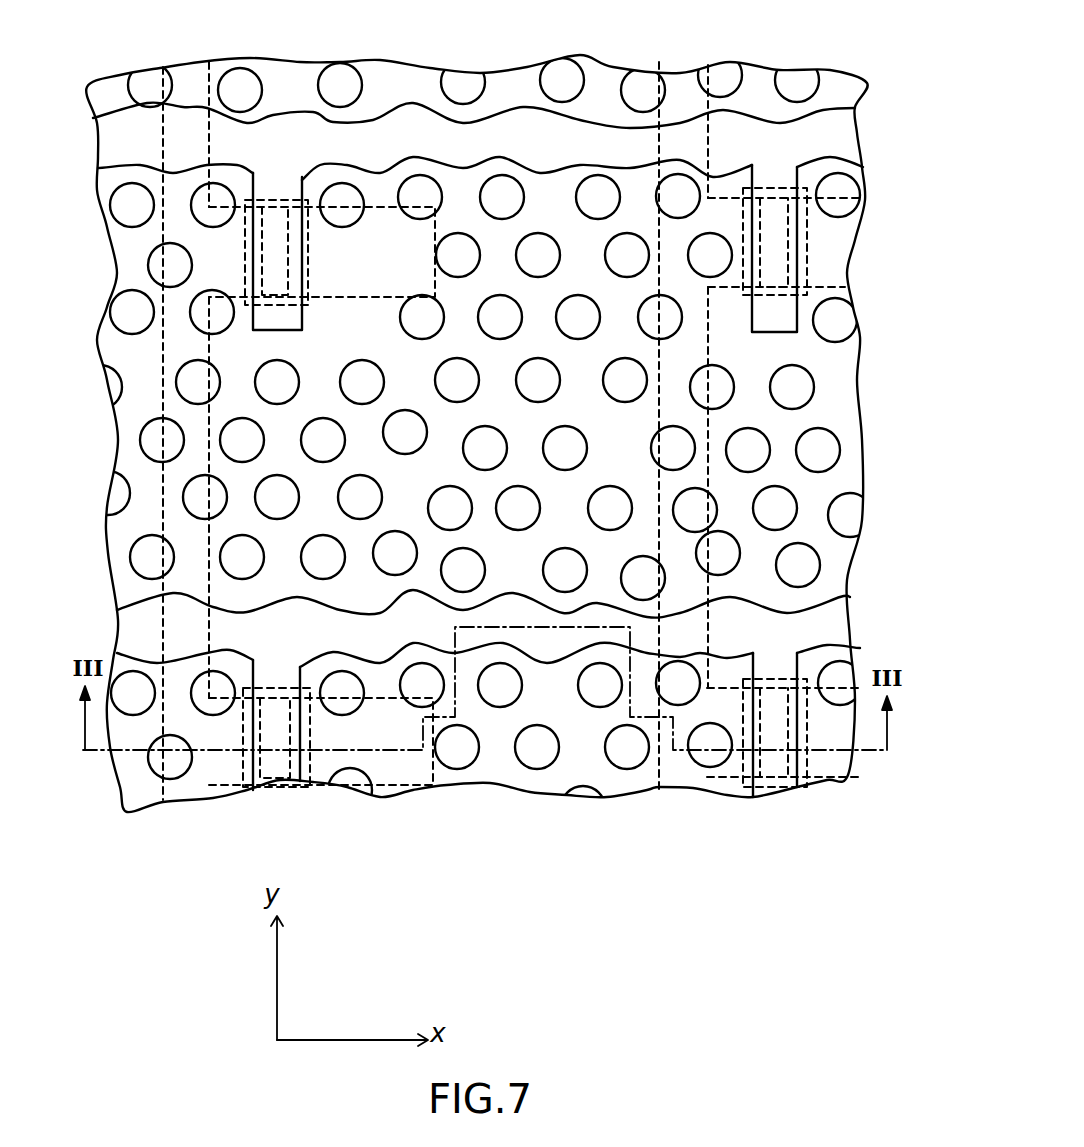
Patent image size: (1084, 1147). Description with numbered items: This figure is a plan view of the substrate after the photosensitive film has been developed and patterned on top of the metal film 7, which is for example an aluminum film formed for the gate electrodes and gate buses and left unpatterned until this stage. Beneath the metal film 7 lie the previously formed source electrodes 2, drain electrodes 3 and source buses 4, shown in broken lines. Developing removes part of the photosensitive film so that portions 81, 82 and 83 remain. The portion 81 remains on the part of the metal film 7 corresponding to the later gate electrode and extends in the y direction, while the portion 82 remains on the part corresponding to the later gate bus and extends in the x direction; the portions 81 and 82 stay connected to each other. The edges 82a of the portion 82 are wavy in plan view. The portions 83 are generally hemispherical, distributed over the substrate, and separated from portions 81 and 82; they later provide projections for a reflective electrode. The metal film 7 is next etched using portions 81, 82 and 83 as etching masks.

The source electrode 2 is at (228, 762).
The drain electrode 3 is at (826, 252).
The source bus 4 is at (178, 411).
The metal film 7 is at (497, 748).
The remaining portion of photosensitive film 81 is at (292, 320).
The remaining portion of photosensitive film 82 is at (425, 118).
The edge 82a is at (515, 103).
The remaining portion of photosensitive film 83 is at (453, 753).